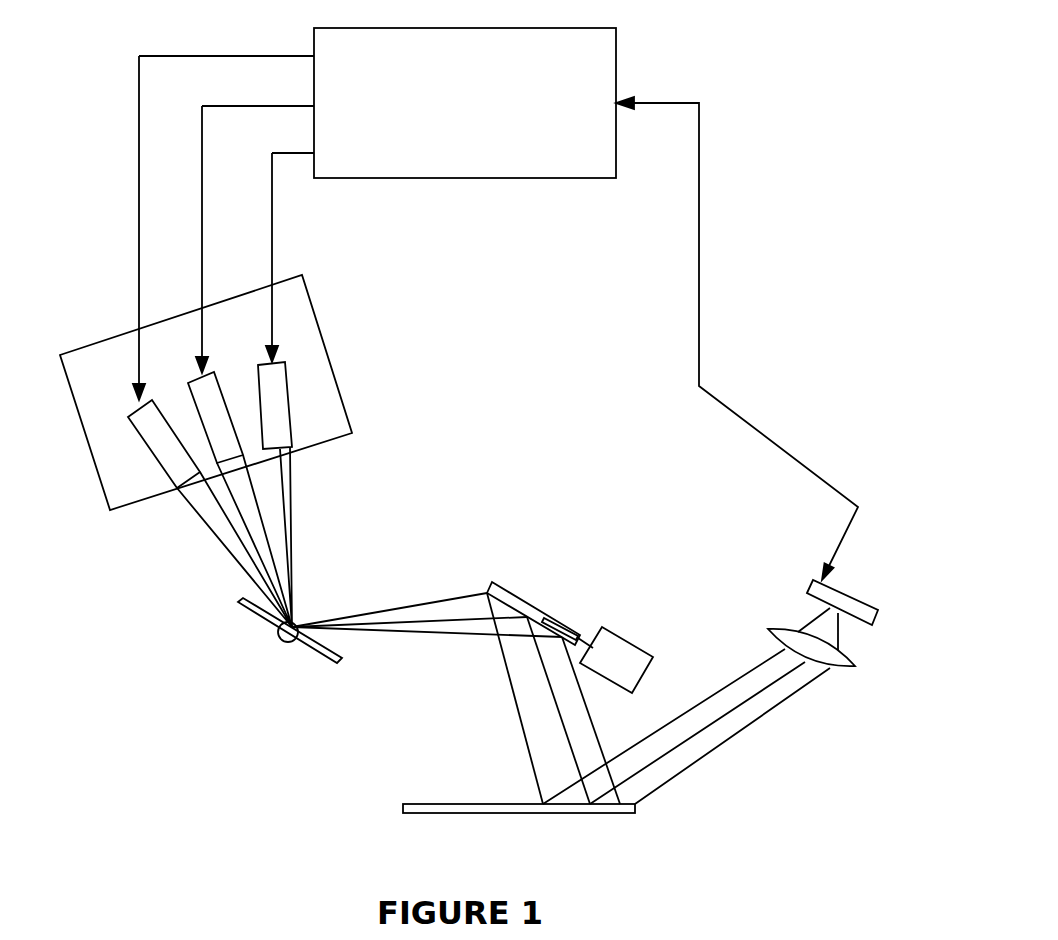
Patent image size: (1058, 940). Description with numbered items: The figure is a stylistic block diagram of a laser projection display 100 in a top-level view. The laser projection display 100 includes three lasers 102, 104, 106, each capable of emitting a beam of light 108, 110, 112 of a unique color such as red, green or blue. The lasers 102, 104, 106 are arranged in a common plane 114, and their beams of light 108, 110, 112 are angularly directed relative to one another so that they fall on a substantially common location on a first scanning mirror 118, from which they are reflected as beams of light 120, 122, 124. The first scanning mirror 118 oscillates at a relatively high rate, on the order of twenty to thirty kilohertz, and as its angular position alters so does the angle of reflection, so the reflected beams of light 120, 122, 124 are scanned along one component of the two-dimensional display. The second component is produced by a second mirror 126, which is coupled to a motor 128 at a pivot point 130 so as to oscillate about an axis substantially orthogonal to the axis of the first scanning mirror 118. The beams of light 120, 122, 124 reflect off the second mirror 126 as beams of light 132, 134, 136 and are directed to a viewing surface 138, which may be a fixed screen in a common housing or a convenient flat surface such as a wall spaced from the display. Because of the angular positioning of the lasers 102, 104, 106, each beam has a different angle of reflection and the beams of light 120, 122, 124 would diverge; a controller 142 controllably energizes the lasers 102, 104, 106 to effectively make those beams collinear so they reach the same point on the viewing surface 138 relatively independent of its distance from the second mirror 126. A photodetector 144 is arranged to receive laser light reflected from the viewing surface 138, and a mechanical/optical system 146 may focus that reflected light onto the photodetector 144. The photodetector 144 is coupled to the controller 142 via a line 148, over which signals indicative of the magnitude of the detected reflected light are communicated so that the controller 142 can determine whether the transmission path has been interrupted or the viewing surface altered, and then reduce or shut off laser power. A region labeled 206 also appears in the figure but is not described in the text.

The laser projection display 100 is at (775, 194).
The laser 102 is at (147, 433).
The laser 104 is at (213, 388).
The laser 106 is at (280, 378).
The beam of light 108 is at (207, 507).
The beam of light 110 is at (247, 503).
The beam of light 112 is at (287, 540).
The common plane 114 is at (92, 343).
The first scanning mirror 118 is at (328, 653).
The beam of light 120 is at (278, 643).
The beam of light 122 is at (427, 615).
The beam of light 124 is at (458, 597).
The second mirror 126 is at (513, 590).
The motor 128 is at (633, 655).
The pivot point 130 is at (585, 633).
The beam of light 132 is at (603, 718).
The beam of light 134 is at (568, 742).
The beam of light 136 is at (520, 717).
The viewing surface 138 is at (612, 808).
The controller 142 is at (485, 142).
The photodetector 144 is at (873, 617).
The mechanical/optical system 146 is at (840, 668).
The line 148 is at (754, 423).
The region 206 is at (515, 359).